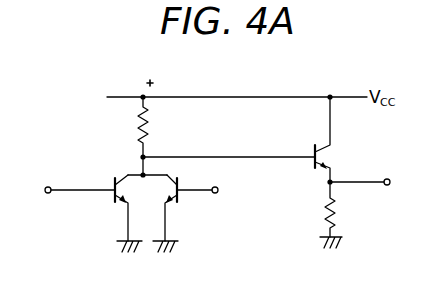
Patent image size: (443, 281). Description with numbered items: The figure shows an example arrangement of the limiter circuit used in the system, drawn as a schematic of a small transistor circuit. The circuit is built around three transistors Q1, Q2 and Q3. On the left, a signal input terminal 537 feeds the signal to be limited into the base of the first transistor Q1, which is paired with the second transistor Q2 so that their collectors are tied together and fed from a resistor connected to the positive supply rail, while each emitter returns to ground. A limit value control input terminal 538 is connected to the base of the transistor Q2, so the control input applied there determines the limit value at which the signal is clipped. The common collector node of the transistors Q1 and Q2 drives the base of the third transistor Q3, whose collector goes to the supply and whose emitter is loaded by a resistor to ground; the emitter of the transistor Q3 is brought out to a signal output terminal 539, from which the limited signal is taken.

The signal input terminal 537 is at (47, 194).
The limit value control input terminal 538 is at (216, 194).
The signal output terminal 539 is at (388, 185).
The transistor Q1 is at (113, 199).
The transistor Q2 is at (180, 199).
The transistor Q3 is at (318, 166).